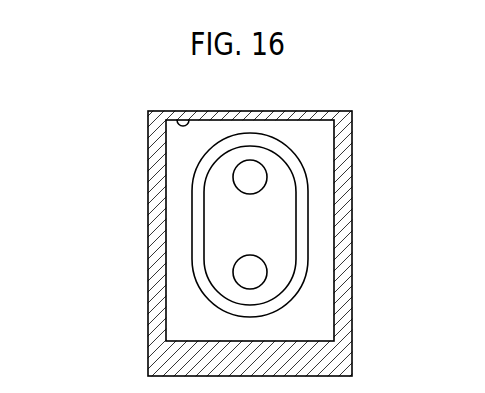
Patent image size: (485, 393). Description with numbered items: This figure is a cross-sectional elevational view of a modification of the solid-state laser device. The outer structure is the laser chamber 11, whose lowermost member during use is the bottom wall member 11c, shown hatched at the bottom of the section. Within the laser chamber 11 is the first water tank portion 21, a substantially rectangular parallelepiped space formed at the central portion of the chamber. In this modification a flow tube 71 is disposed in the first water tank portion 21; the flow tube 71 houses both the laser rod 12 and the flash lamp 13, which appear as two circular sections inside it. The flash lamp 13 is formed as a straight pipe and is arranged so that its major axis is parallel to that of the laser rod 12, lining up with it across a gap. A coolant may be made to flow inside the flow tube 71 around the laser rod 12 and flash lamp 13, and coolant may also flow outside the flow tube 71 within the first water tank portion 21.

The laser chamber 11 is at (270, 110).
The bottom wall member 11c is at (178, 356).
The first water tank portion 21 is at (178, 115).
The flow tube 71 is at (202, 175).
The flash lamp 13 is at (246, 177).
The laser rod 12 is at (242, 273).